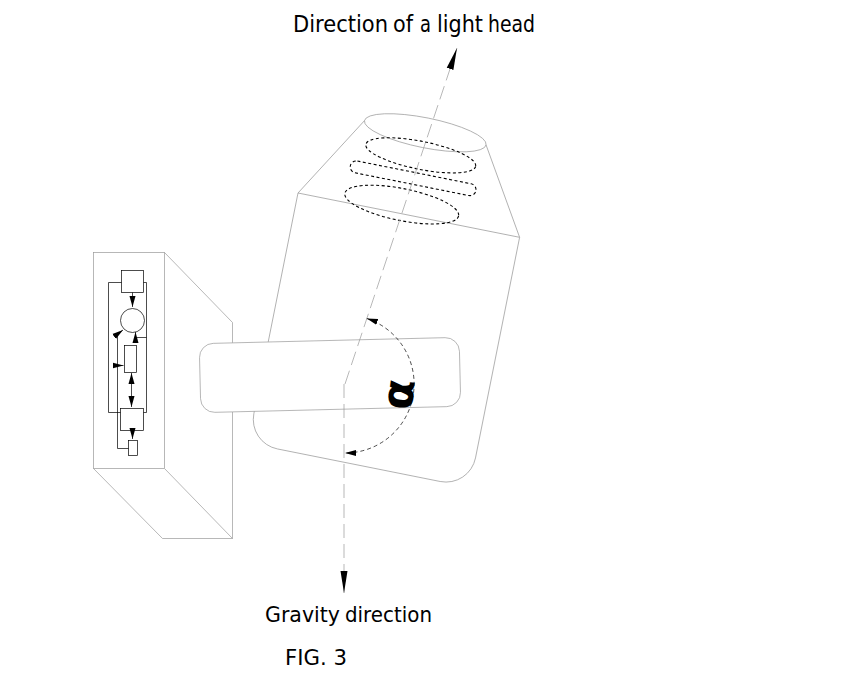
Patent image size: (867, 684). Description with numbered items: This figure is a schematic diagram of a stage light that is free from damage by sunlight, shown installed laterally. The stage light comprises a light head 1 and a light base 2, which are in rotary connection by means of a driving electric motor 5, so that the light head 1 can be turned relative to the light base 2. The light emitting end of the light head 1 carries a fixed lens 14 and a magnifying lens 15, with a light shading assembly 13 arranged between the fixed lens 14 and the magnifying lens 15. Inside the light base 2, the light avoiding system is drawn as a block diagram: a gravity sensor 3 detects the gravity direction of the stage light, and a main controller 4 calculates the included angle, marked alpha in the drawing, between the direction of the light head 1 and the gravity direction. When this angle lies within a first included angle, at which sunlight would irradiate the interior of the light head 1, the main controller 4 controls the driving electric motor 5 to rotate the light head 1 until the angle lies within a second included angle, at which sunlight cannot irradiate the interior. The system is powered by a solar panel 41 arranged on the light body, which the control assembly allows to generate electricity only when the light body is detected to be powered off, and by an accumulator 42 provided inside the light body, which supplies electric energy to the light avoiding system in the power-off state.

The light head 1 is at (507, 323).
The light base 2 is at (131, 250).
The gravity sensor 3 is at (123, 355).
The main controller 4 is at (119, 420).
The driving electric motor 5 is at (119, 318).
The light shading assembly 13 is at (472, 192).
The fixed lens 14 is at (460, 220).
The magnifying lens 15 is at (467, 163).
The solar panel 41 is at (120, 268).
The accumulator 42 is at (126, 452).